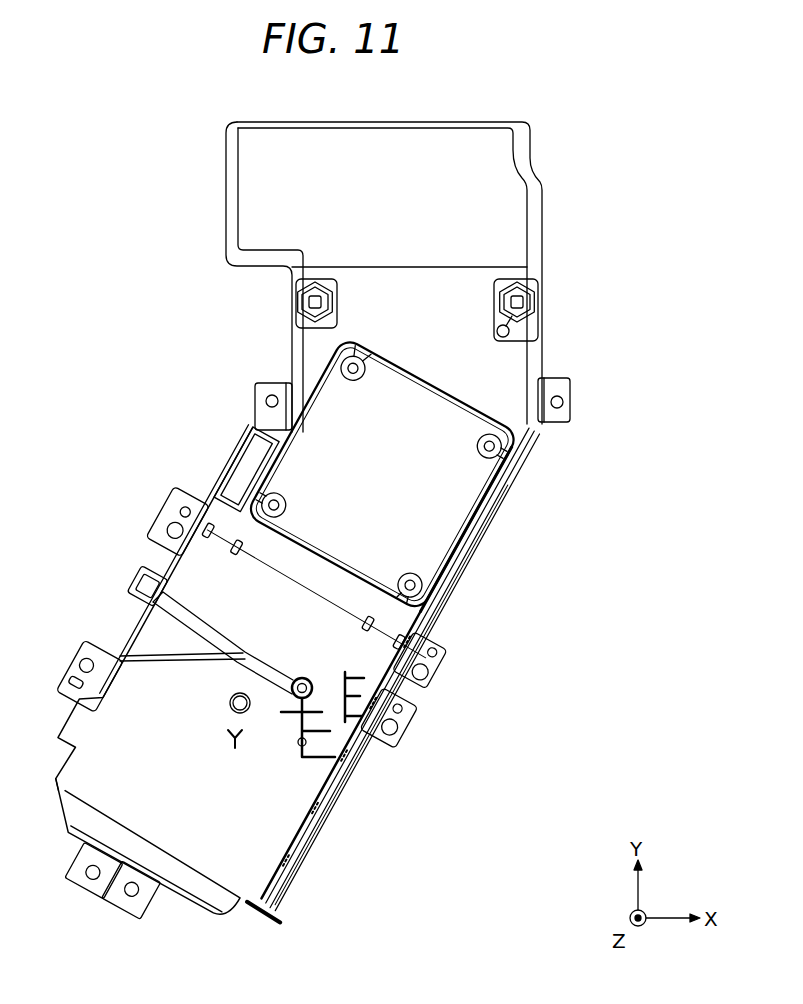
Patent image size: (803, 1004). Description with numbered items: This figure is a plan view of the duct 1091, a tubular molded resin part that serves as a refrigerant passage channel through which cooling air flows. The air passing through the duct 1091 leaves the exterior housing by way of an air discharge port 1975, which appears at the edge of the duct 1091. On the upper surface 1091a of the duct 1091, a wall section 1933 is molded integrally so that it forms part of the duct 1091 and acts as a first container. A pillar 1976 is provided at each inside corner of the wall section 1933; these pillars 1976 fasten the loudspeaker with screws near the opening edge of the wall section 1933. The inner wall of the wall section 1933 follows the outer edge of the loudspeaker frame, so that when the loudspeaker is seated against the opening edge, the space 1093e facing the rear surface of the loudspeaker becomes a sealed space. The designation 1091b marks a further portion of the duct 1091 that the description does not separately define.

The duct 1091 is at (255, 798).
The upper surface of the duct 1091a is at (330, 440).
The second plate portion of housing 1091b is at (481, 503).
The space 1093e is at (350, 470).
The wall section 1933 is at (485, 533).
The air discharge port 1975 is at (305, 862).
The pillar 1976 is at (340, 369).